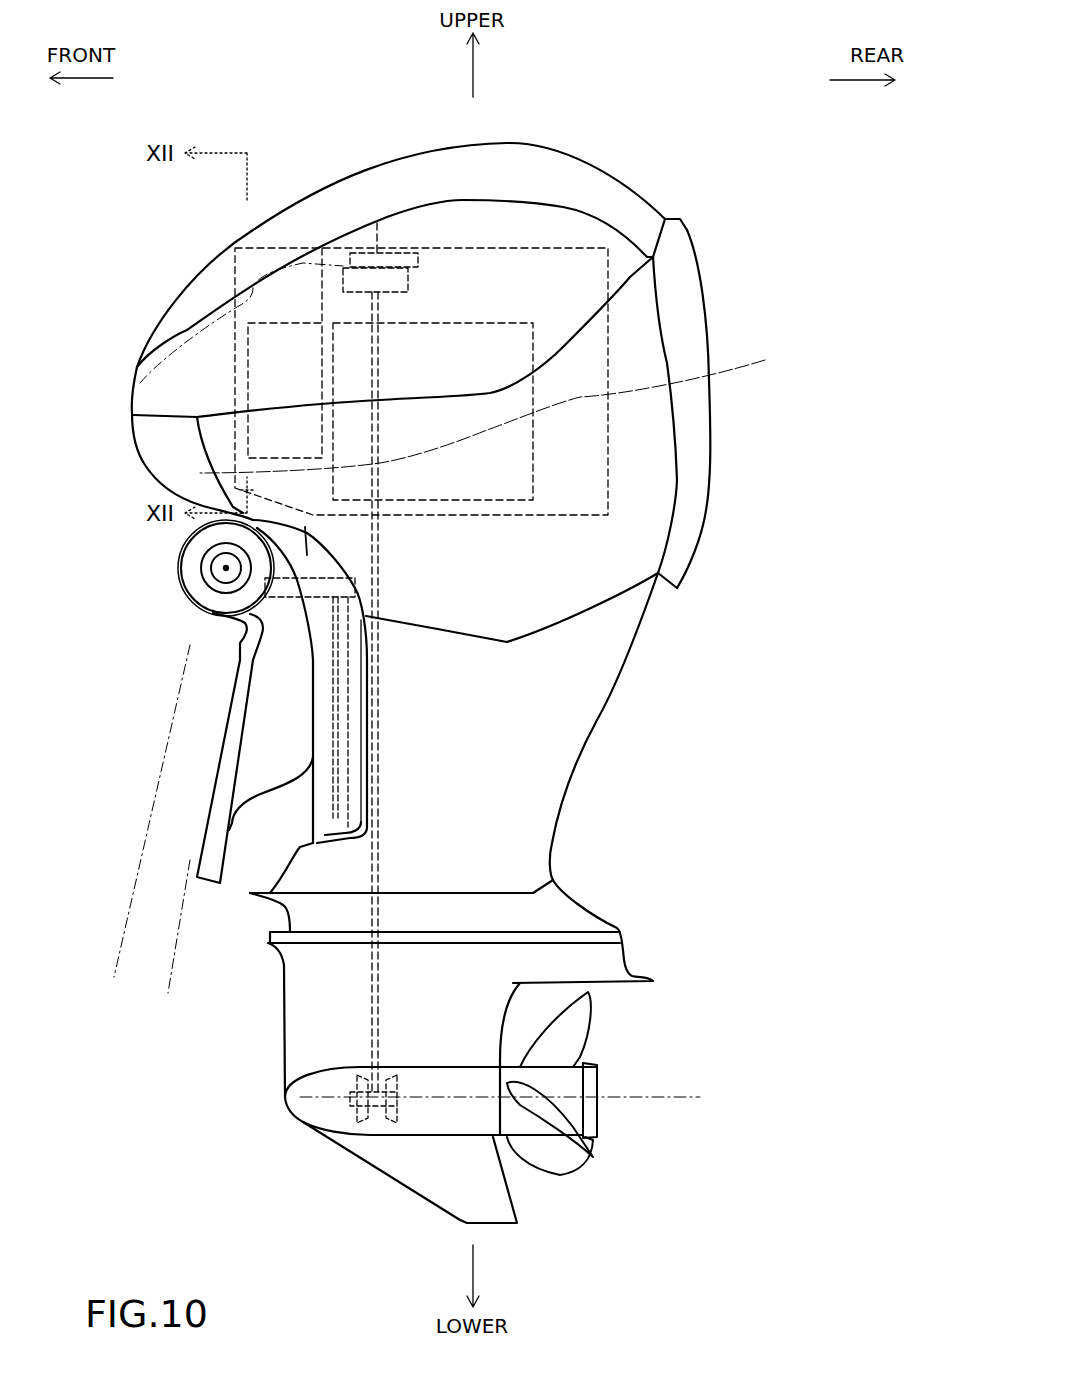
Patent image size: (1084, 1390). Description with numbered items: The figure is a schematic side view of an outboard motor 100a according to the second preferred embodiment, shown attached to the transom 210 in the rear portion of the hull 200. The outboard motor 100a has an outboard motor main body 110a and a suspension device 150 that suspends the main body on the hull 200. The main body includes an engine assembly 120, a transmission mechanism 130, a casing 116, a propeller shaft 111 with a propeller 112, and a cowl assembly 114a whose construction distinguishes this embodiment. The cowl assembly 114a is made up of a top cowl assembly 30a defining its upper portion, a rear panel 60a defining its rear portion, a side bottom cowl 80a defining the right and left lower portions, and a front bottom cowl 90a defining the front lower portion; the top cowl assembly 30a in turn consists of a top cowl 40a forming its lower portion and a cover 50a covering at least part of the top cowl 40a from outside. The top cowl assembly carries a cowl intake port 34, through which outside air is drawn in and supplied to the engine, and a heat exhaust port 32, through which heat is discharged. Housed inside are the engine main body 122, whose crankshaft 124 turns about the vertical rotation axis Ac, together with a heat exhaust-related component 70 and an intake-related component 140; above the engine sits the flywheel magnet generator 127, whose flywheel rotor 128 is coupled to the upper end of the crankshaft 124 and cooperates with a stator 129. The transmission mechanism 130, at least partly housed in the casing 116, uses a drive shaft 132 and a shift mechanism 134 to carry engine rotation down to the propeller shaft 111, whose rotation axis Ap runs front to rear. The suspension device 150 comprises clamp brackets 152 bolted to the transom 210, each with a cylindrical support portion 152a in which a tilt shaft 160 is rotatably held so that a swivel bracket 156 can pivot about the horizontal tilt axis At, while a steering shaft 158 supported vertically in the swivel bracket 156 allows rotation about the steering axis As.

The outboard motor 100a is at (252, 120).
The heat exhaust-related component 70 is at (340, 250).
The cowl intake port 34 is at (467, 200).
The rotation axis of the crankshaft Ac is at (380, 347).
The flywheel magnet generator 127 is at (136, 195).
The flywheel rotor 128 is at (343, 272).
The stator 129 is at (343, 287).
The heat exhaust port 32 is at (137, 367).
The intake-related component 140 is at (240, 387).
The crankshaft 124 is at (370, 420).
The cover 50a is at (593, 183).
The top cowl 40a is at (560, 253).
The top cowl assembly 30a is at (752, 170).
The rear panel 60a is at (677, 287).
The side bottom cowl 80a is at (630, 333).
The front bottom cowl 90a is at (505, 410).
The cowl assembly 114a is at (812, 190).
The outboard motor main body 110a is at (880, 262).
The engine main body 122 is at (580, 418).
The engine assembly 120 is at (608, 467).
The casing 116 is at (597, 647).
The drive shaft 132 is at (300, 688).
The shift mechanism 134 is at (400, 1077).
The transmission mechanism 130 is at (800, 710).
The propeller shaft 111 is at (457, 1097).
The propeller 112 is at (577, 1023).
The tilt axis At is at (226, 568).
The support portion 152a is at (203, 553).
The tilt shaft 160 is at (213, 580).
The steering shaft 158 is at (333, 697).
The clamp bracket 152 is at (245, 712).
The swivel bracket 156 is at (323, 742).
The suspension device 150 is at (93, 608).
The transom 210 is at (144, 817).
The hull 200 is at (129, 1010).
The steering axis As is at (333, 827).
The rotation axis of the propeller shaft Ap is at (680, 1097).